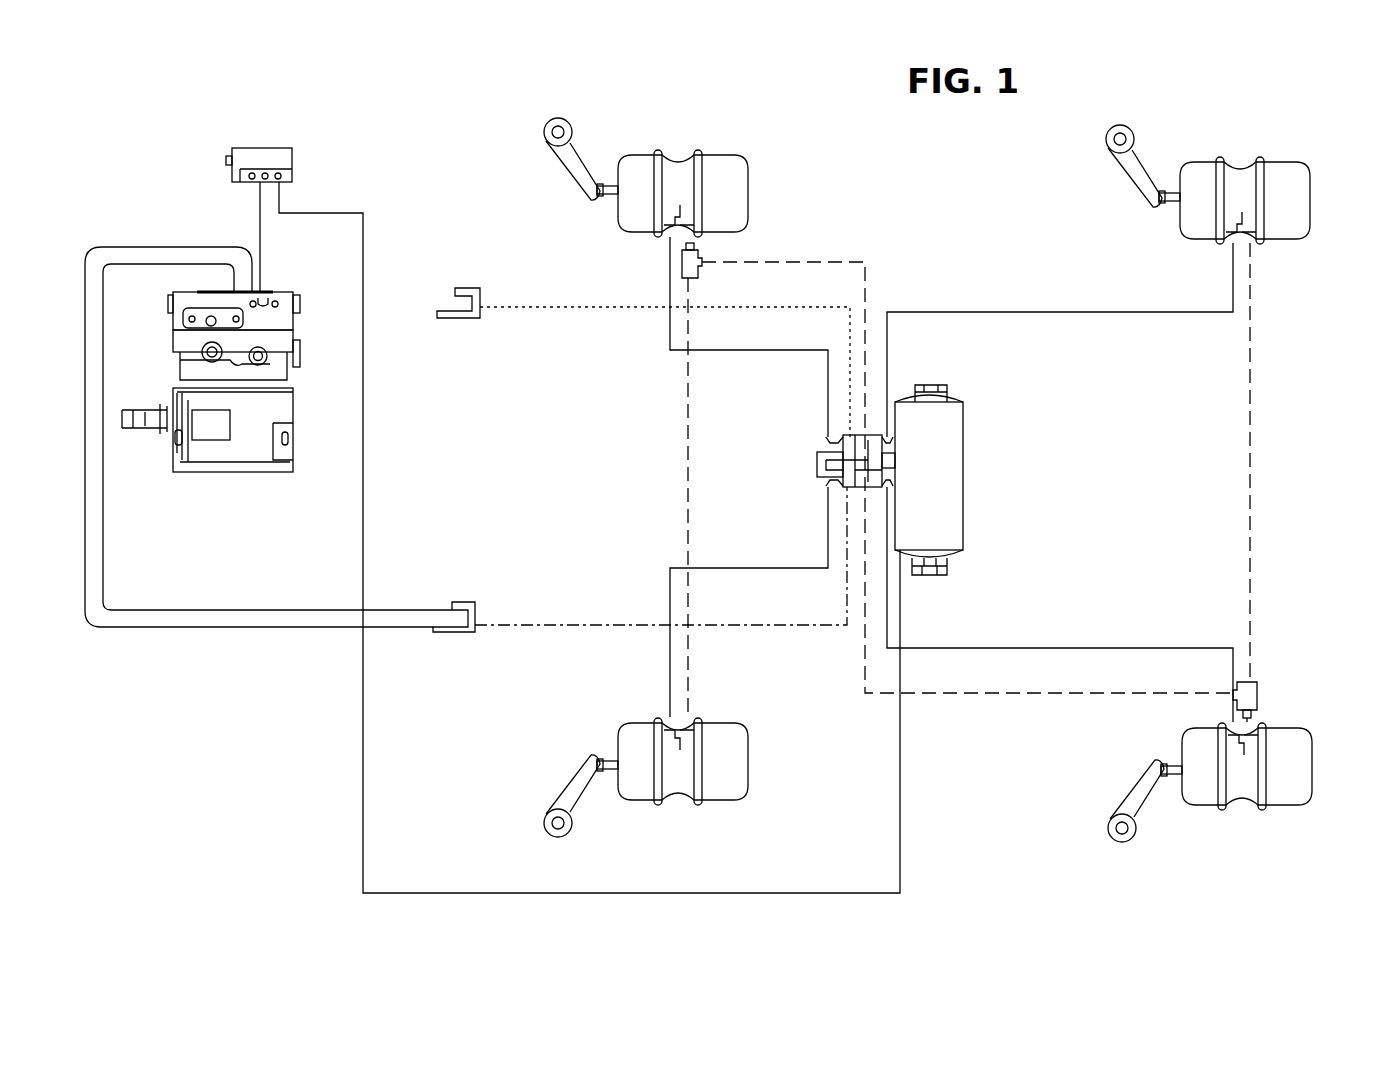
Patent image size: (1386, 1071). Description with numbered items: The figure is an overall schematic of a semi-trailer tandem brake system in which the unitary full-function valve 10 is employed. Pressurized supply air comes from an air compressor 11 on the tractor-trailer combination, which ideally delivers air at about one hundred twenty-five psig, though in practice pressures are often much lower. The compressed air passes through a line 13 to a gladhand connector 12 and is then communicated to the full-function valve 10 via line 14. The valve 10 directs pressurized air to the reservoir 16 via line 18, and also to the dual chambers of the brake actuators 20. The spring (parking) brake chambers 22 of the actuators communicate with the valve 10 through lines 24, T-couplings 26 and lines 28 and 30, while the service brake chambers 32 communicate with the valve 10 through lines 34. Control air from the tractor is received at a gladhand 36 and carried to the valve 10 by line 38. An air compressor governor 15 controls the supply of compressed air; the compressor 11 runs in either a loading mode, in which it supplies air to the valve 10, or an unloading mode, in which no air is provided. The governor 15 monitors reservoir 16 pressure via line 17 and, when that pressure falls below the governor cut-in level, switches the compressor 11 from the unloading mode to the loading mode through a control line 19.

The unitary full-function valve 10 is at (815, 452).
The air compressor 11 is at (243, 486).
The gladhand connector 12 is at (477, 632).
The line 13 is at (258, 610).
The line 14 is at (735, 626).
The air compressor governor 15 is at (290, 158).
The reservoir 16 is at (945, 457).
The line 17 is at (363, 458).
The line 18 is at (892, 470).
The control line 19 is at (257, 226).
The brake actuators 20 is at (960, 485).
The spring (parking) brake chambers 22 is at (738, 188).
The lines 24 is at (830, 262).
The T-couplings 26 is at (698, 266).
The lines 28 is at (684, 468).
The lines 30 is at (694, 245).
The service brake chambers 32 is at (637, 177).
The lines 34 is at (736, 350).
The gladhand 36 is at (477, 318).
The line 38 is at (546, 308).